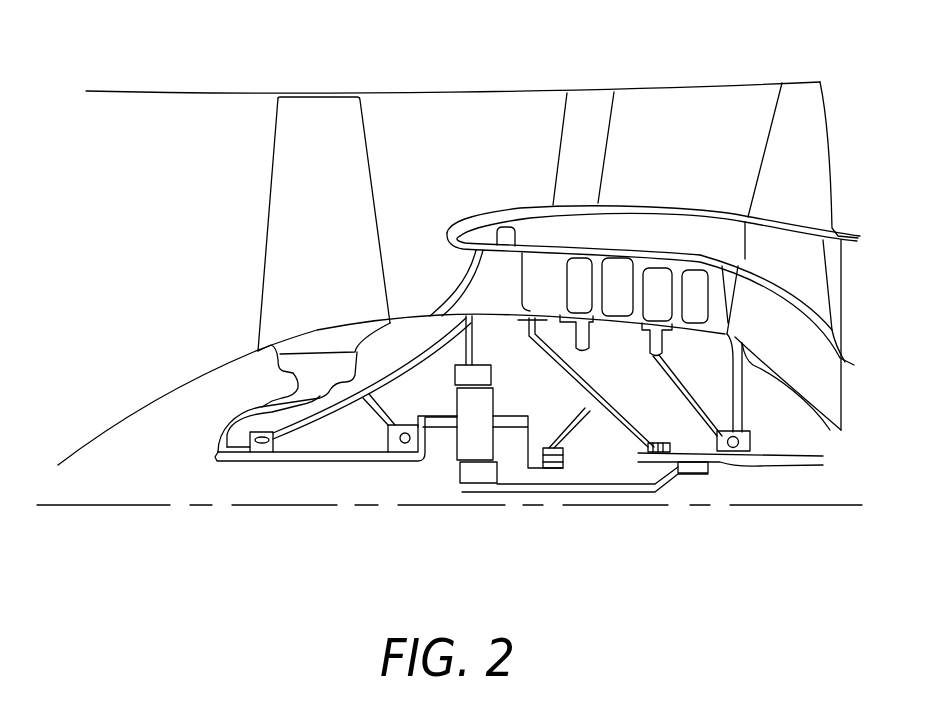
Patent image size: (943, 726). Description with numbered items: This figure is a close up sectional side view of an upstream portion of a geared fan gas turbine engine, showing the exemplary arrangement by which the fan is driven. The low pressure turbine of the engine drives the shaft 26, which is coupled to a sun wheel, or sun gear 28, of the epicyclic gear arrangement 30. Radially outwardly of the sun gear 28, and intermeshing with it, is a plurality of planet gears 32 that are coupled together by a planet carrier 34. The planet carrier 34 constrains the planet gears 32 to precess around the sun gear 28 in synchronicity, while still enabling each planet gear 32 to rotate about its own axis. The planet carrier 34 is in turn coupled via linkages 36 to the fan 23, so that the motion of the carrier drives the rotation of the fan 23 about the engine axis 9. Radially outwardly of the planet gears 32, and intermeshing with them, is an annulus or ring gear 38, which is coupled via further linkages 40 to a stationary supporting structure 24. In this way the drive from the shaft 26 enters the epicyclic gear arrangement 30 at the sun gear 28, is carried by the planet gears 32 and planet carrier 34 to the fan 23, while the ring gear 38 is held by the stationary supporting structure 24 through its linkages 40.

The engine axis 9 is at (149, 505).
The fan 23 is at (293, 223).
The stationary supporting structure 24 is at (478, 264).
The shaft 26 is at (600, 487).
The sun gear 28 is at (477, 470).
The epicyclic gear arrangement 30 is at (443, 457).
The planet gears 32 is at (462, 448).
The planet carrier 34 is at (527, 445).
The linkages 36 is at (425, 448).
The ring gear 38 is at (478, 375).
The linkages 40 is at (475, 345).